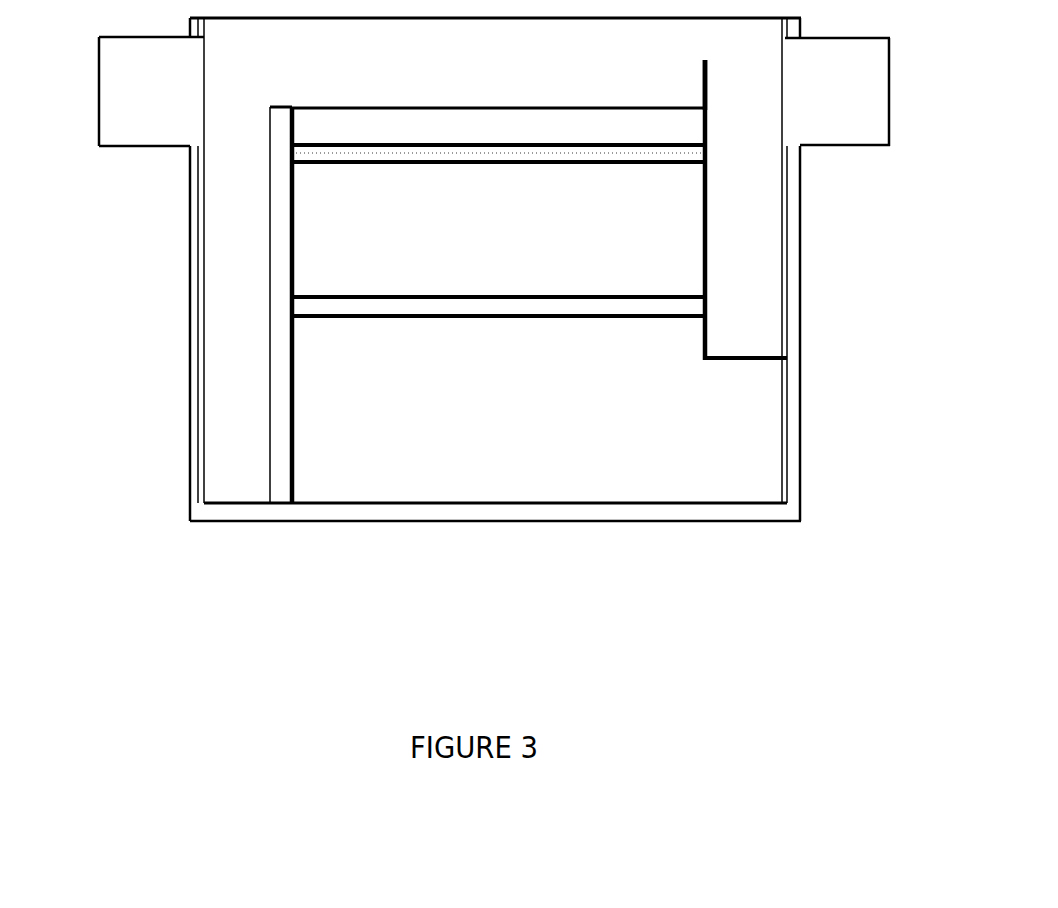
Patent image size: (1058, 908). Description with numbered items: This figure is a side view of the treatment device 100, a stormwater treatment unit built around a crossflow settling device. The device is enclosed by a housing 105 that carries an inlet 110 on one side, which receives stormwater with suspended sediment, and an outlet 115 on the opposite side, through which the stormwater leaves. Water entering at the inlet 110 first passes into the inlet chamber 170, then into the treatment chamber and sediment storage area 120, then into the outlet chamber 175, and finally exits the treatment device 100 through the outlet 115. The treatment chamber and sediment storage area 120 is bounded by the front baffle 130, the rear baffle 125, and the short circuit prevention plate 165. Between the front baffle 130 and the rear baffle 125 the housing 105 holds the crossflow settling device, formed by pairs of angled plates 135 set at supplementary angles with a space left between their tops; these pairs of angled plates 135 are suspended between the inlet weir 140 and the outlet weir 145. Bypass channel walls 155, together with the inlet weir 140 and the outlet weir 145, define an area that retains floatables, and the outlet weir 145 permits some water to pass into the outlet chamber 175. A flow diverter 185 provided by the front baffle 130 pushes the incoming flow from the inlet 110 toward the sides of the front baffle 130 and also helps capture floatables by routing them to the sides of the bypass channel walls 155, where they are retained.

The treatment device 100 is at (813, 607).
The housing 105 is at (628, 525).
The inlet 110 is at (120, 124).
The outlet 115 is at (847, 108).
The treatment chamber and sediment storage area 120 is at (523, 423).
The rear baffle 125 is at (717, 237).
The front baffle 130 is at (297, 413).
The angled plates 135 is at (513, 246).
The inlet weir 140 is at (298, 133).
The outlet weir 145 is at (708, 92).
The bypass channel walls 155 is at (509, 135).
The short circuit prevention plate 165 is at (730, 364).
The inlet chamber 170 is at (258, 255).
The outlet chamber 175 is at (762, 206).
The flow diverter 185 is at (279, 292).